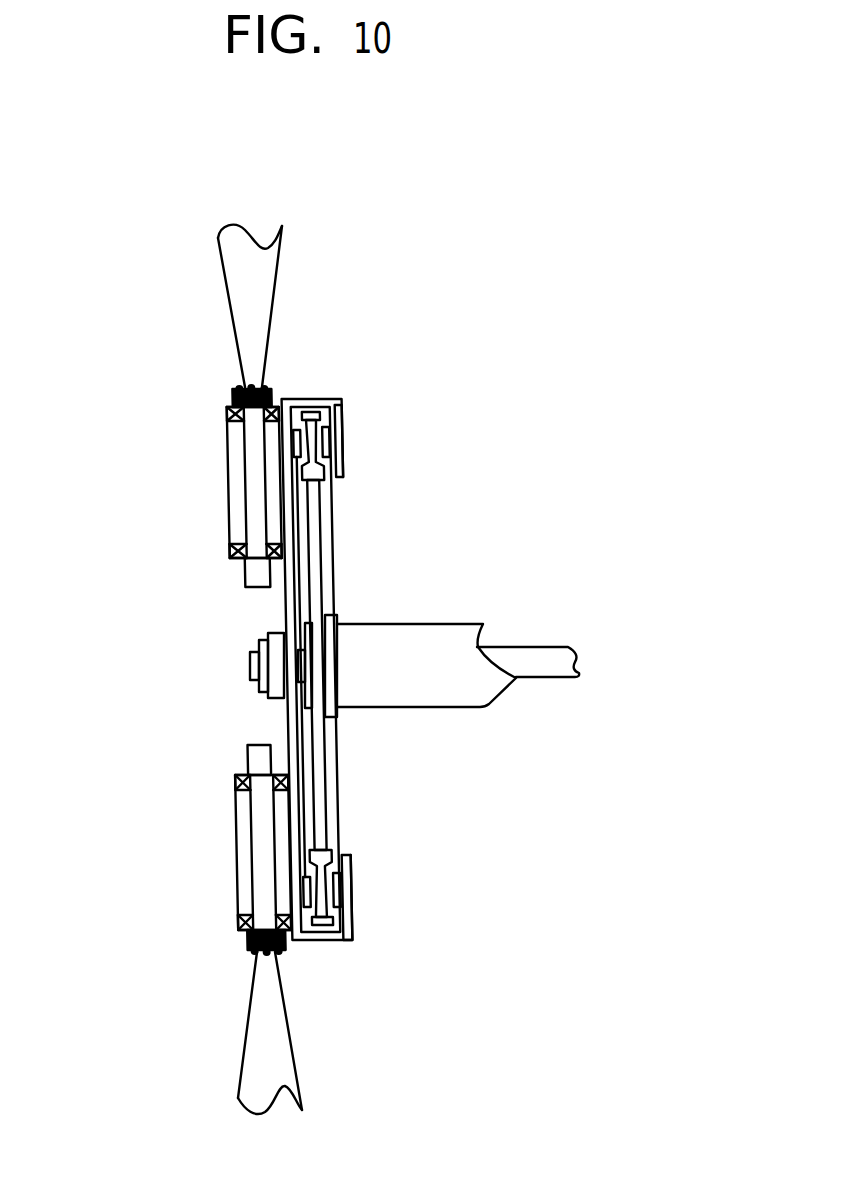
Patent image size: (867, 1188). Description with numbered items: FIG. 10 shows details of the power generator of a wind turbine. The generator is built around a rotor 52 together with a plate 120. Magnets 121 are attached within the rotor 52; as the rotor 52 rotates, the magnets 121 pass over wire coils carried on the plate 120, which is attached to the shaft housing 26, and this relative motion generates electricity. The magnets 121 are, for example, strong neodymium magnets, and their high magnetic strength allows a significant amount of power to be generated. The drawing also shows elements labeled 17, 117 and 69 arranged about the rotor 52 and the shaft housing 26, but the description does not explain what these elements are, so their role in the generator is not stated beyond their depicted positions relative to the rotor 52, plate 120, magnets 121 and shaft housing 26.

The blade 17 is at (245, 298).
The second blade 117 is at (258, 1048).
The magnets 121 is at (313, 417).
The shaft housing 26 is at (388, 632).
The shaft extension 69 is at (528, 652).
The rotor 52 is at (293, 728).
The plate 120 is at (320, 798).